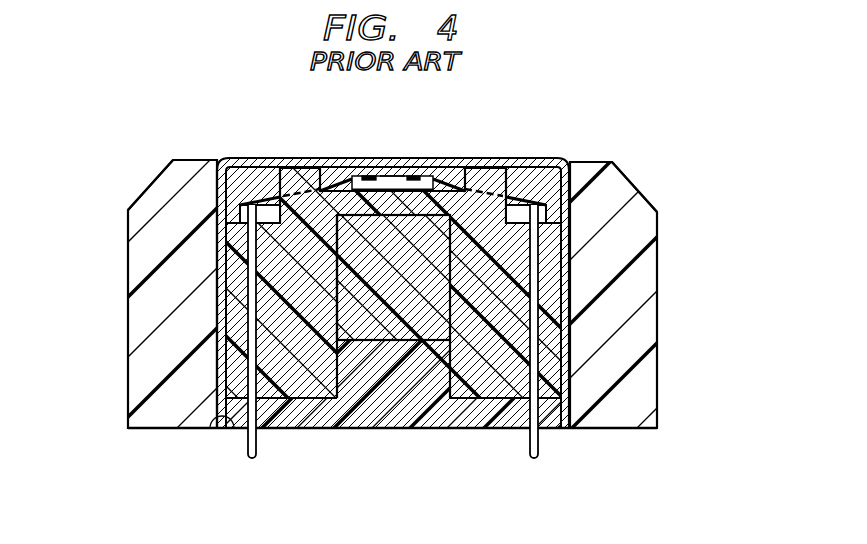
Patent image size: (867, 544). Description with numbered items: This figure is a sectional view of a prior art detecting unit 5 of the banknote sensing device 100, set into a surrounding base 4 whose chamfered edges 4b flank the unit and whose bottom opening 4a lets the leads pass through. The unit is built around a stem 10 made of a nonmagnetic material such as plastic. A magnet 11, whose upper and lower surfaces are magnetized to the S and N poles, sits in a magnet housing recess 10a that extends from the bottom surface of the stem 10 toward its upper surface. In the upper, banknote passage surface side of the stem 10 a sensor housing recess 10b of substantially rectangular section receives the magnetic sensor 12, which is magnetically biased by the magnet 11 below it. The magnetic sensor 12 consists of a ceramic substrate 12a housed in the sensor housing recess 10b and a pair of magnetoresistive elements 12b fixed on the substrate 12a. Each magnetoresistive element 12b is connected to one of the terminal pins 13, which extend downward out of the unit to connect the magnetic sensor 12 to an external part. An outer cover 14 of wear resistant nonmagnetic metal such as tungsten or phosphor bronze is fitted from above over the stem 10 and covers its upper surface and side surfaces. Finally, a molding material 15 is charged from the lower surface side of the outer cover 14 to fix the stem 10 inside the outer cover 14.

The base 4 is at (150, 367).
The opening in base 4a is at (230, 430).
The chamfered edge of base 4b is at (155, 180).
The detecting unit 5 is at (433, 272).
The stem 10 is at (433, 272).
The magnet housing recess 10a is at (337, 373).
The sensor housing recess 10b is at (450, 176).
The magnet 11 is at (396, 318).
The magnetic sensor 12 is at (347, 131).
The ceramic substrate 12a is at (395, 176).
The magnetoresistive elements 12b is at (370, 176).
The terminal pins 13 is at (247, 453).
The outer cover 14 is at (553, 158).
The molding material 15 is at (465, 410).
The light emitting device 100 is at (433, 272).